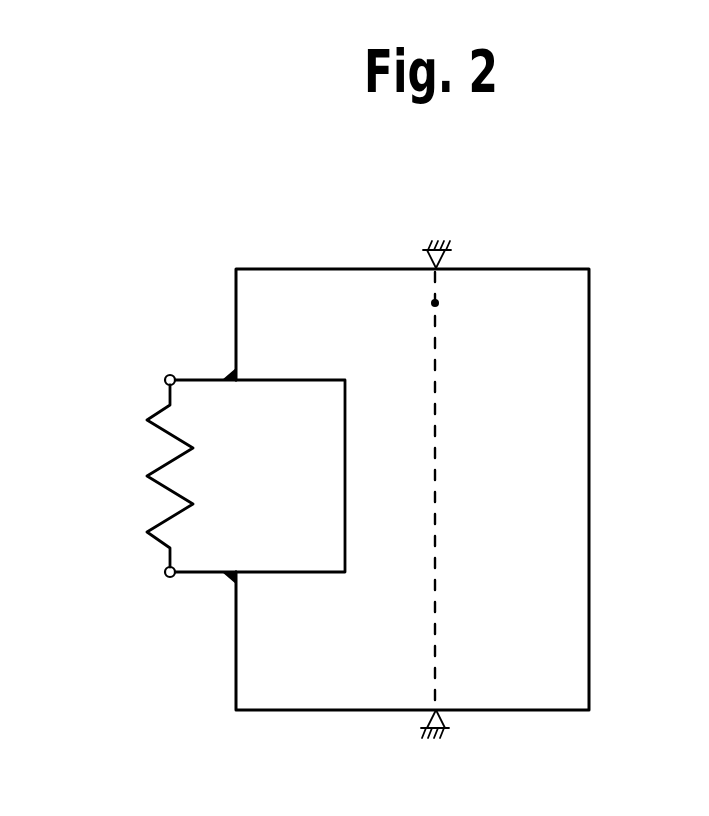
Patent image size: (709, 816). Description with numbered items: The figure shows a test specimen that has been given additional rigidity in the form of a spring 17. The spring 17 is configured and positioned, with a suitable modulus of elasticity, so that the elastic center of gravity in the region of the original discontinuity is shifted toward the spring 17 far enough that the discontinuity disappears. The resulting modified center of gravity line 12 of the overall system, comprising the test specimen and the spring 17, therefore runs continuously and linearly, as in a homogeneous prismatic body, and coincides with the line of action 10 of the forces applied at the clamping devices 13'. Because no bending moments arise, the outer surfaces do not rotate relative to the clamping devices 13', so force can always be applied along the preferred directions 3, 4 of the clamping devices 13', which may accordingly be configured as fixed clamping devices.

The spring 17 is at (150, 532).
The preferred direction of the clamping device 3 is at (557, 490).
The preferred direction of the clamping device 4 is at (557, 490).
The line of action 10 is at (435, 440).
The modified center of gravity line 12 is at (436, 302).
The clamping devices 13' is at (443, 473).